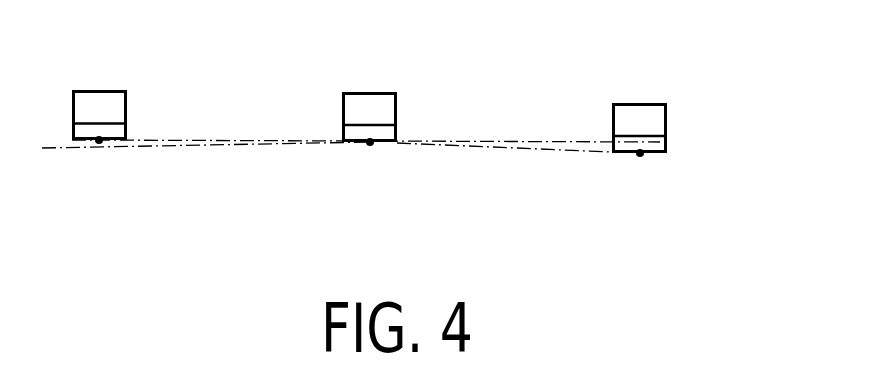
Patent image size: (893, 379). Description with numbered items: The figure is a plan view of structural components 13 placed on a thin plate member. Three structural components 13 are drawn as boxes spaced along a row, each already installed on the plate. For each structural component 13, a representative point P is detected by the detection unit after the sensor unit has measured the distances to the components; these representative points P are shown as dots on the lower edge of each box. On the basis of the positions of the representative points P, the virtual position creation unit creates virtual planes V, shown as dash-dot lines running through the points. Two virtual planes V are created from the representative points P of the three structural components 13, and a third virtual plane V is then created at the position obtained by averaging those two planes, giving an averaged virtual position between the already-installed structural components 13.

The structural component 13 is at (98, 90).
The representative point P is at (99, 144).
The virtual plane V is at (398, 191).